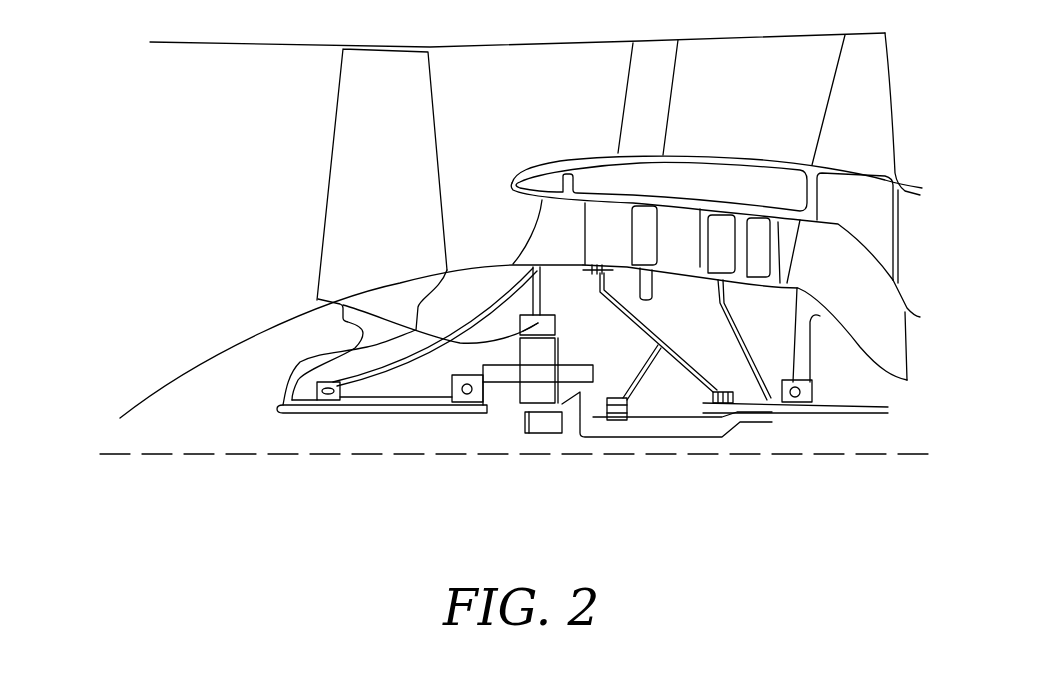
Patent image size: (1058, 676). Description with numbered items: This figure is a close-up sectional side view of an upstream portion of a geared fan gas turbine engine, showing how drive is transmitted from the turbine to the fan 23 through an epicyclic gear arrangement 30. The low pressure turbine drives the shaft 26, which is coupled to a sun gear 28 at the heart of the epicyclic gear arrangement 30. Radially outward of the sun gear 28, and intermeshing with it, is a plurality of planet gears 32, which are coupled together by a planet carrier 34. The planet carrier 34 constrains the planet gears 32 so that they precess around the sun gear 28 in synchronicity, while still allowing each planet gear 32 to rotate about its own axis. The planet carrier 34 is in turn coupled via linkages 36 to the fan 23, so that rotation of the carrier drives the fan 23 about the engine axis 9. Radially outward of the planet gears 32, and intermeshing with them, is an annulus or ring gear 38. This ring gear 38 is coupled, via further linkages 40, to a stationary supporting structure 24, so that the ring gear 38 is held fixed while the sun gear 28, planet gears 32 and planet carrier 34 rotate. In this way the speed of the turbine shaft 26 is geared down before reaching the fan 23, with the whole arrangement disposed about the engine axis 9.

The engine axis 9 is at (215, 456).
The fan 23 is at (343, 153).
The stationary supporting structure 24 is at (543, 233).
The shaft 26 is at (788, 417).
The sun gear 28 is at (540, 422).
The epicyclic gear arrangement 30 is at (508, 405).
The planet gears 32 is at (530, 395).
The planet carrier 34 is at (587, 390).
The linkages 36 is at (497, 405).
The ring gear 38 is at (340, 304).
The linkages 40 is at (540, 298).